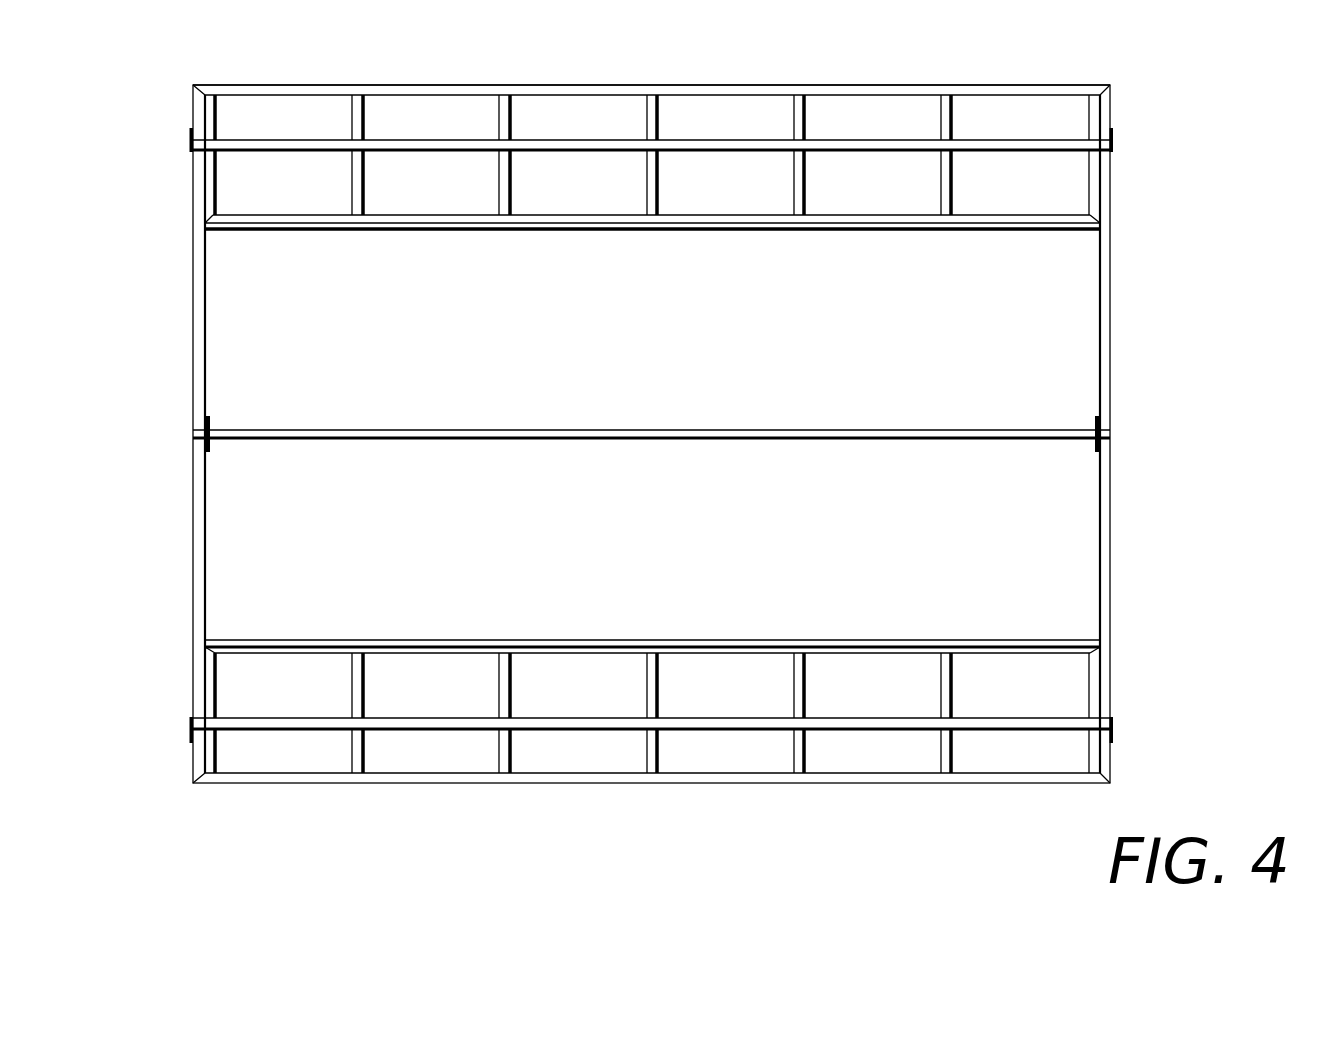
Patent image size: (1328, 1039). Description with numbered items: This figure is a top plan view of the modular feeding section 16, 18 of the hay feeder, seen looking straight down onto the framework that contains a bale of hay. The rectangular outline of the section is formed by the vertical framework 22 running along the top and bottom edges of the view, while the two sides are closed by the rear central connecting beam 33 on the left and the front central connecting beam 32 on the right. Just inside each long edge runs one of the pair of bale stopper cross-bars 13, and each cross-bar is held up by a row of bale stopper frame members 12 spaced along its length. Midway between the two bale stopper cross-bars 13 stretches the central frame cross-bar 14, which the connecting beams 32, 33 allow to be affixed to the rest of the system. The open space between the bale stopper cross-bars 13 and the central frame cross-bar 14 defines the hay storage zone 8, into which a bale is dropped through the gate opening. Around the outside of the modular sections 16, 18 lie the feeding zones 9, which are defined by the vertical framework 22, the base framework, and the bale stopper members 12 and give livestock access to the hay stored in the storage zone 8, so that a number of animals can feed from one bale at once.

The modular feeding section 16 is at (583, 413).
The modular feeding section 18 is at (160, 123).
The feeding zone 9 is at (569, 76).
The hay storage zone 8 is at (325, 340).
The rear central connecting beam 33 is at (192, 397).
The front central connecting beam 32 is at (1098, 552).
The vertical framework 22 is at (1050, 152).
The bale stopper cross-bar 13 is at (565, 232).
The central frame cross-bar 14 is at (542, 427).
The bale stopper frame member 12 is at (660, 188).